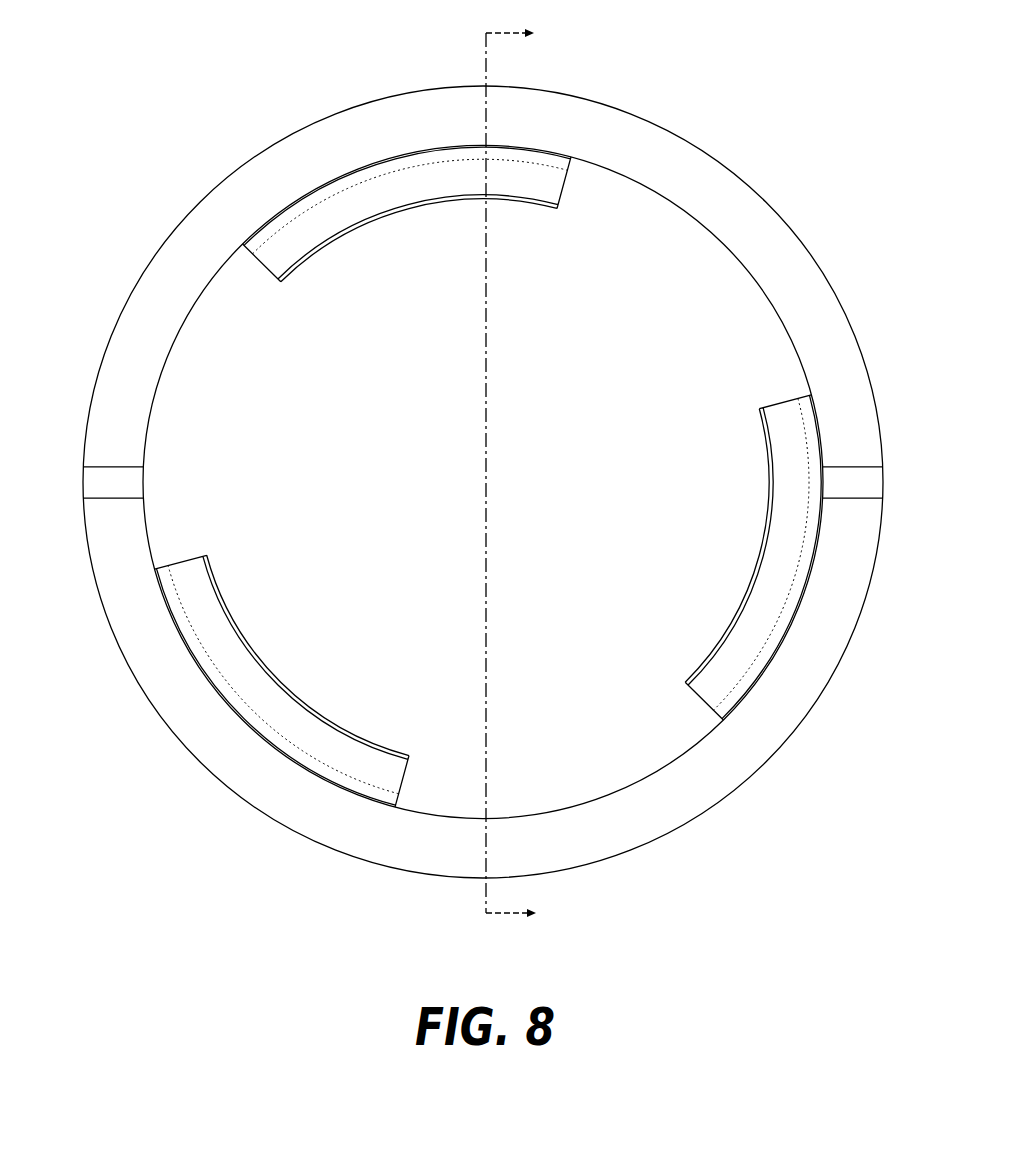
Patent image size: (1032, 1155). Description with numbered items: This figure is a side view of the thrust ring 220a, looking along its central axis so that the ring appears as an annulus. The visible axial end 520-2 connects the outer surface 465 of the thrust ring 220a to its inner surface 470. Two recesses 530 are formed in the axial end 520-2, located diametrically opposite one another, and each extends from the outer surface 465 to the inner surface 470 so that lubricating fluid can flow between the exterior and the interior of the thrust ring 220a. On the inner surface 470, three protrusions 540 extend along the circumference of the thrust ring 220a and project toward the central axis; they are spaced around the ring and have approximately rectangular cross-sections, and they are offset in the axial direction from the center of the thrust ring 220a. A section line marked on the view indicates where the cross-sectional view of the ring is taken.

The thrust ring 220a is at (740, 74).
The axial end 520-2 is at (700, 790).
The outer surface 465 is at (483, 482).
The inner surface 470 is at (483, 481).
The recesses 530 is at (483, 482).
The protrusions 540 is at (488, 477).